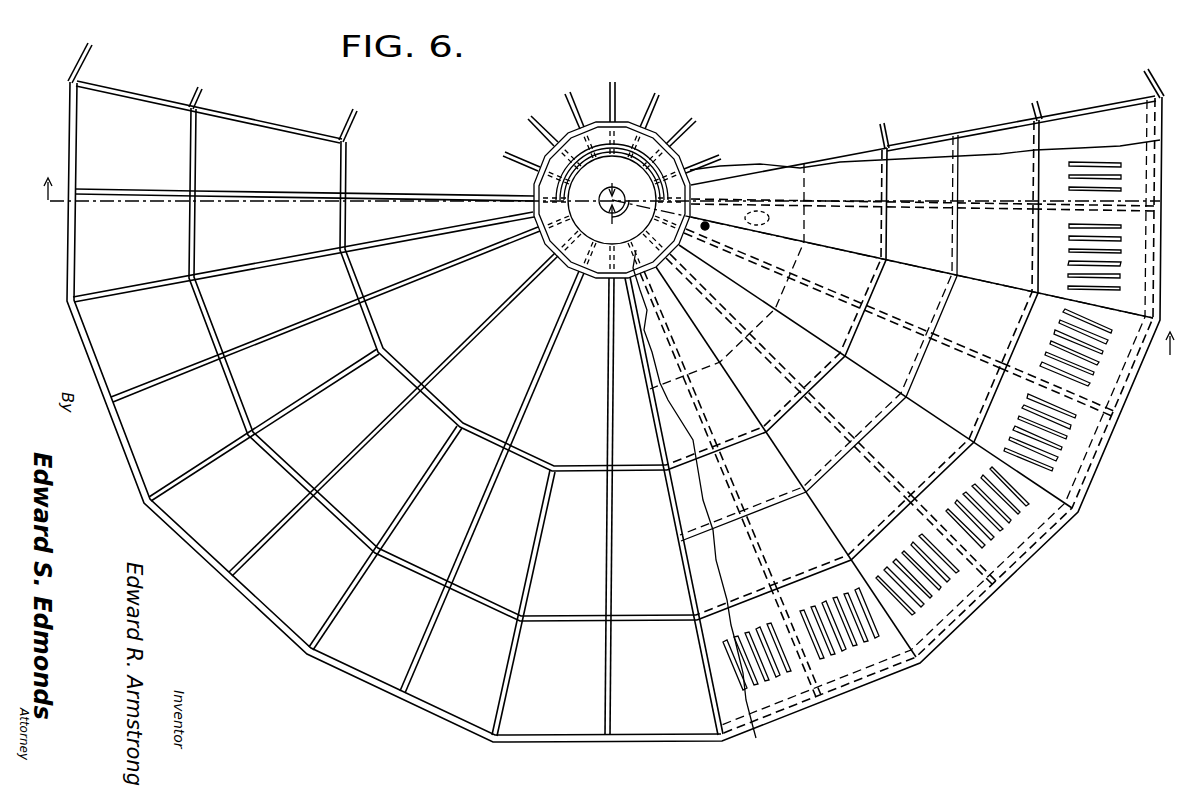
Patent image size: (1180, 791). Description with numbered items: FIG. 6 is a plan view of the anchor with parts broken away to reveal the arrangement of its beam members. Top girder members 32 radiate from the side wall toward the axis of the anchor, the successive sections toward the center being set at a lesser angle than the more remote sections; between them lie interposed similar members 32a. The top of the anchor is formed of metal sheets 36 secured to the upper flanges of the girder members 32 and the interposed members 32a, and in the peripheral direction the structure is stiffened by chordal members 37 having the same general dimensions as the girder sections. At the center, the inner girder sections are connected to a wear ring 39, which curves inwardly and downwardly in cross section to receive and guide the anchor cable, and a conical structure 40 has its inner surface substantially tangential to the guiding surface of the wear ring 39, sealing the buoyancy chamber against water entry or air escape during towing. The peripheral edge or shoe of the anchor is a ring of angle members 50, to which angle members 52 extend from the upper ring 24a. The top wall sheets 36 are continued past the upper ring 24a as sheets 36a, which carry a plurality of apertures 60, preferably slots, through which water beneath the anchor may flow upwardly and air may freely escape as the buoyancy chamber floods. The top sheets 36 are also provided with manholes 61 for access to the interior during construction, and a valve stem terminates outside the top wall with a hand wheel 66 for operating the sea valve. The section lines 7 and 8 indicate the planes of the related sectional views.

The section line 7- 7 is at (891, 292).
The section line 8- 8 is at (600, 176).
The upper ring 24a is at (216, 335).
The top girder members 32 is at (615, 103).
The interposed similar members 32a is at (412, 493).
The metal sheets 36 is at (847, 178).
The sheets 36a is at (1112, 442).
The chordal members 37 is at (350, 270).
The wear ring 39 is at (665, 162).
The conical structure 40 is at (588, 189).
The ring of angle members 50 is at (73, 270).
The angle members 52 is at (128, 191).
The apertures 60 is at (1110, 283).
The manholes 61 is at (764, 213).
The hand wheel 66 is at (706, 224).